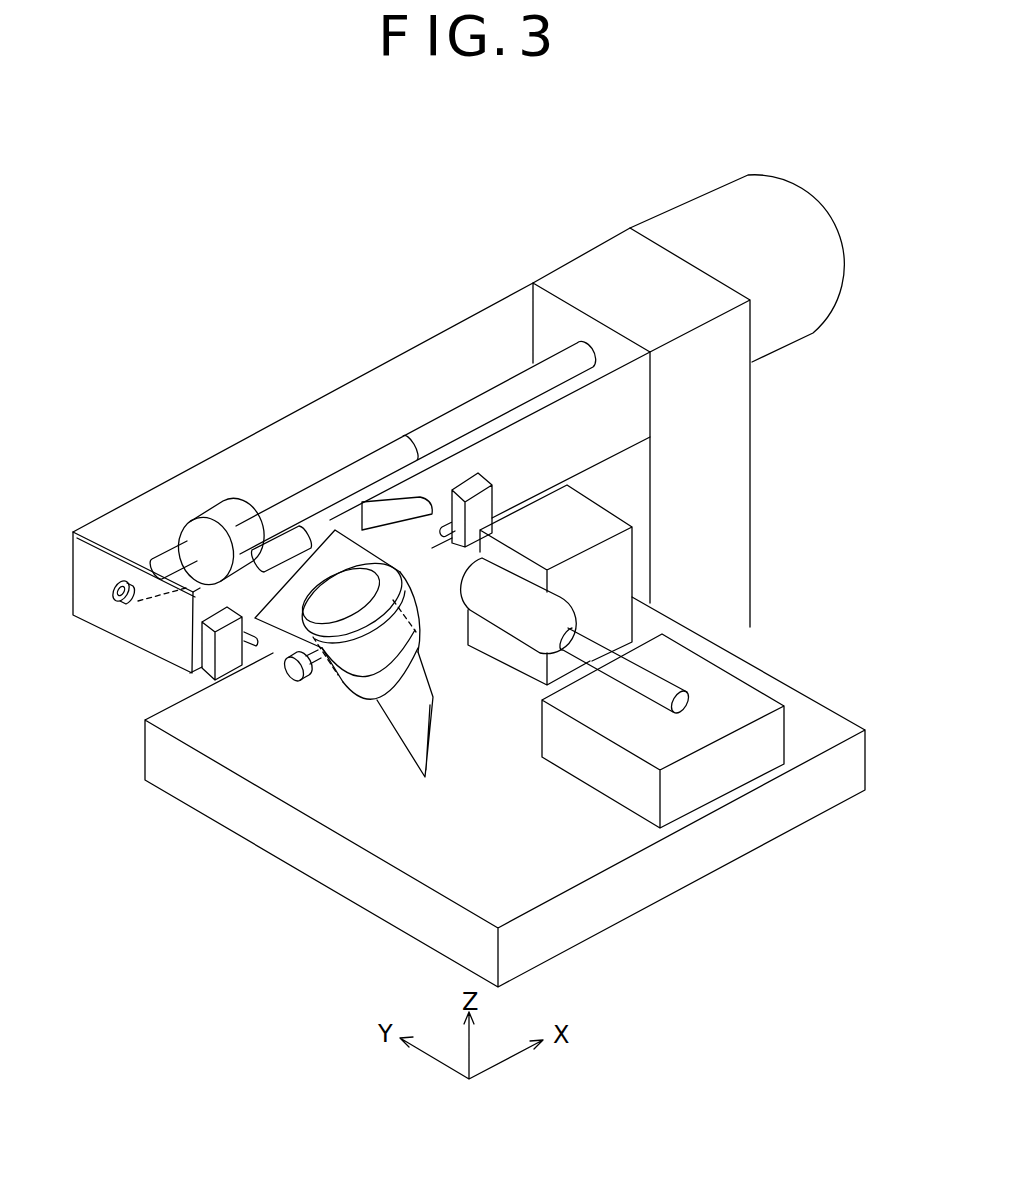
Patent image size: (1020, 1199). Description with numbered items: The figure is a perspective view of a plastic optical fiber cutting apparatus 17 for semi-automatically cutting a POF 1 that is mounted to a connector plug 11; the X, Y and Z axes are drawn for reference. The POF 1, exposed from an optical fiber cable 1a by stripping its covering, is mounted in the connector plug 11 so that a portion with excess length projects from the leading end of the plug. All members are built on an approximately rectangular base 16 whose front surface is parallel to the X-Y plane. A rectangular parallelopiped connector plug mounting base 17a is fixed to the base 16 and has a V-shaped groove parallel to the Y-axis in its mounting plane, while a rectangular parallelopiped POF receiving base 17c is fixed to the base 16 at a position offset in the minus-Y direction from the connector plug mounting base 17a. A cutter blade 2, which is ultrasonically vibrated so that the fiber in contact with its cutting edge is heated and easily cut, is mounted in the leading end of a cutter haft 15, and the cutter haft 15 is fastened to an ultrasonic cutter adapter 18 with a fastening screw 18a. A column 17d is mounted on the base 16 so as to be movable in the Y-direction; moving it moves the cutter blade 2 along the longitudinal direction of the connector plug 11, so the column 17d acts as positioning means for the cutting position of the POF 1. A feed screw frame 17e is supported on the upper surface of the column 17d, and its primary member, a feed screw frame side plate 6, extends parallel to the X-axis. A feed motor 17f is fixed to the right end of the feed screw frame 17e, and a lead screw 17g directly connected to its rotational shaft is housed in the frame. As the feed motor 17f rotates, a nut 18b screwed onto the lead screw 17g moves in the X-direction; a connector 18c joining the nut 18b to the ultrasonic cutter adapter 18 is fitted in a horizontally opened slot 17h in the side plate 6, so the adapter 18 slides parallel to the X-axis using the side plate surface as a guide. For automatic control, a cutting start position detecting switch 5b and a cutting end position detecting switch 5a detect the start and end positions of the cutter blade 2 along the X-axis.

The POF 1 is at (653, 686).
The optical fiber cable 1a is at (442, 562).
The cutter blade 2 is at (410, 725).
The cutting end position detecting switch 5a is at (505, 493).
The cutting start position detecting switch 5b is at (205, 658).
The feed screw frame side plate 6 is at (630, 395).
The connector plug 11 is at (537, 603).
The cutter haft 15 is at (373, 690).
The base 16 is at (828, 707).
The plastic optical fiber cutting apparatus 17 is at (463, 214).
The connector plug mounting base 17a is at (595, 522).
The POF receiving base 17c is at (767, 677).
The column 17d is at (753, 398).
The feed screw frame 17e is at (255, 432).
The feed motor 17f is at (807, 253).
The lead screw 17g is at (347, 467).
The slot 17h is at (428, 502).
The ultrasonic cutter adapter 18 is at (273, 653).
The fastening screw 18a is at (300, 673).
The nut 18b is at (200, 514).
The connector 18c is at (267, 557).